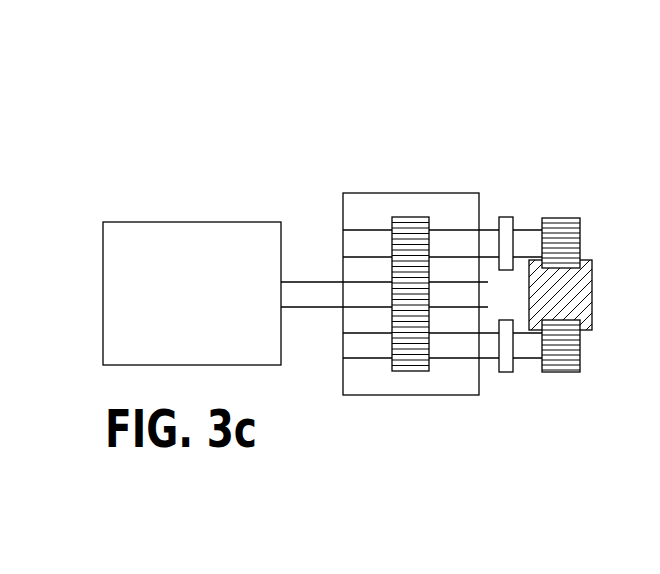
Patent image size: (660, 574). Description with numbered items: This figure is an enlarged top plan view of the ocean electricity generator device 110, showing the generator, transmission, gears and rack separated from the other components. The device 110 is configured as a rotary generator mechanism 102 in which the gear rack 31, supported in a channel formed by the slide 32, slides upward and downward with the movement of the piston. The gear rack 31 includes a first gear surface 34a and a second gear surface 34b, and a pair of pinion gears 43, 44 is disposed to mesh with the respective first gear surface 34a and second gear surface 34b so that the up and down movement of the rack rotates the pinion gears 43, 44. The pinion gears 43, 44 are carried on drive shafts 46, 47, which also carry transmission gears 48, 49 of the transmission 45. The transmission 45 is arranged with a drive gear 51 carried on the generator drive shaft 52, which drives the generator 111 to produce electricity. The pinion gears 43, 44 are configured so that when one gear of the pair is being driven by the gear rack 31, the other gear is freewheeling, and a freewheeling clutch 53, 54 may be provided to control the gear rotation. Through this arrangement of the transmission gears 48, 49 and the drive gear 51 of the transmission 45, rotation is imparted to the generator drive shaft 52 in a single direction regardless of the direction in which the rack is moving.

The device 110 is at (440, 102).
The rotary generator mechanism 102 is at (182, 180).
The generator 111 is at (135, 289).
The generator drive shaft 52 is at (305, 295).
The transmission 45 is at (406, 200).
The transmission gear 48 is at (392, 221).
The drive gear 51 is at (392, 310).
The transmission gear 49 is at (400, 365).
The drive shaft 46 is at (488, 230).
The drive shaft 47 is at (488, 358).
The freewheeling clutch 54 is at (507, 217).
The freewheeling clutch 53 is at (507, 372).
The slide 32 is at (552, 293).
The gear rack 31 is at (593, 293).
The first gear surface 34a is at (560, 268).
The second gear surface 34b is at (562, 320).
The pinion gear 43 is at (561, 218).
The pinion gear 44 is at (562, 372).